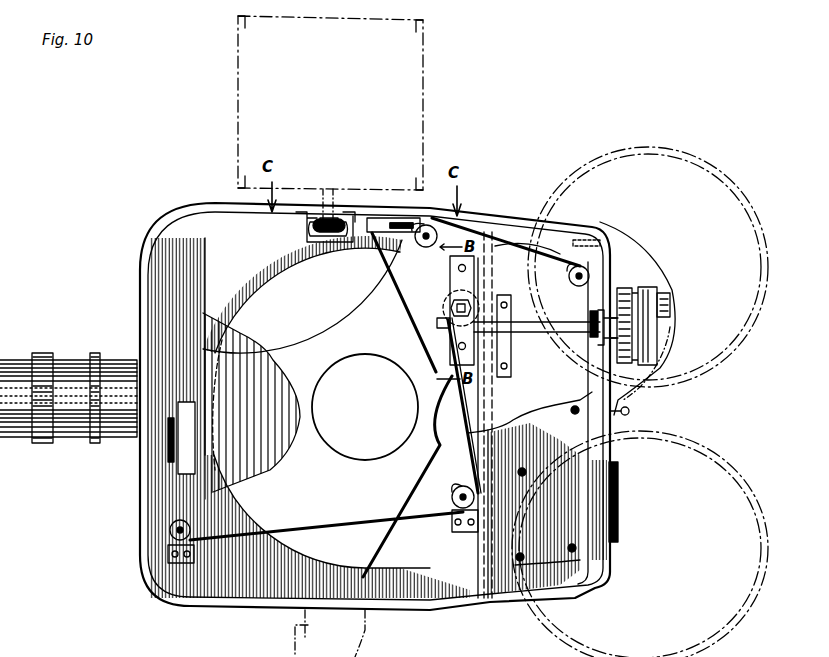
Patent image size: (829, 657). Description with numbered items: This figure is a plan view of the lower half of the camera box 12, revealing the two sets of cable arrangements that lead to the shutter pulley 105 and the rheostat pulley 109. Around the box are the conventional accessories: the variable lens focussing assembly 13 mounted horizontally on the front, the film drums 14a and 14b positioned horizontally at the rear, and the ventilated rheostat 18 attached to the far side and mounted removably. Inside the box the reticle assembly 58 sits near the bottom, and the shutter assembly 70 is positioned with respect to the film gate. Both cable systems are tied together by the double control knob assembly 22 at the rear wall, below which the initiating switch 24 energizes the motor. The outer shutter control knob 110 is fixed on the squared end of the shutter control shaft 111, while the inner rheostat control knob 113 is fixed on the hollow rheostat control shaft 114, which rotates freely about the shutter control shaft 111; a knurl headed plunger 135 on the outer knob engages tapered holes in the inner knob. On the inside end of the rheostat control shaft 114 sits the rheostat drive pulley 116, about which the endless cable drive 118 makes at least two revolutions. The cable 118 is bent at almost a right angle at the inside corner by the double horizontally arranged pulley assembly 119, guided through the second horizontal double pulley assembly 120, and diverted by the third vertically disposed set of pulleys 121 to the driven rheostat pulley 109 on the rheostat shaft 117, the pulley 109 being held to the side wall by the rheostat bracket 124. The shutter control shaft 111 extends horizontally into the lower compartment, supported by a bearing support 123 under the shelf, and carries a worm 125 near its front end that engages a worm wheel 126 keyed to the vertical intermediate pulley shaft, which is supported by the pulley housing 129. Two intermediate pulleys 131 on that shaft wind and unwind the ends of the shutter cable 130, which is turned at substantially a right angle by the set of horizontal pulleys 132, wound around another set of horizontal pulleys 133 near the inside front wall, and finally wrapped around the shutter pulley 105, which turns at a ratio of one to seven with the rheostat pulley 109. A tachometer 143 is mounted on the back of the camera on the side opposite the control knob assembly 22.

The camera box 12 is at (245, 606).
The variable lens focussing assembly 13 is at (86, 352).
The film drum 14a is at (714, 224).
The film drum 14b is at (640, 544).
The ventilated rheostat 18 is at (334, 100).
The double control knob assembly 22 is at (648, 283).
The initiating switch 24 is at (632, 412).
The reticle assembly 58 is at (358, 486).
The shutter assembly 70 is at (188, 400).
The shutter pulley 105 is at (168, 446).
The rheostat pulley 109 is at (320, 236).
The shutter control knob 110 is at (655, 340).
The shutter control shaft 111 is at (538, 326).
The rheostat control knob 113 is at (618, 366).
The rheostat control shaft 114 is at (601, 344).
The rheostat drive pulley 116 is at (592, 336).
The rheostat shaft 117 is at (338, 200).
The endless cable drive 118 is at (548, 258).
The double horizontally arranged pulley assembly 119 is at (575, 283).
The second horizontal double pulley assembly 120 is at (420, 242).
The third vertically disposed set of pulleys 121 is at (378, 238).
The bearing support 123 is at (510, 360).
The rheostat bracket 124 is at (302, 221).
The worm 125 is at (446, 318).
The worm wheel 126 is at (446, 300).
The pulley housing 129 is at (446, 334).
The shutter cable 130 is at (344, 516).
The intermediate pulleys 131 is at (478, 298).
The set of horizontal pulleys 132 is at (456, 488).
The set of horizontal pulleys 133 is at (206, 545).
The knurl headed plunger 135 is at (672, 304).
The tachometer 143 is at (619, 506).